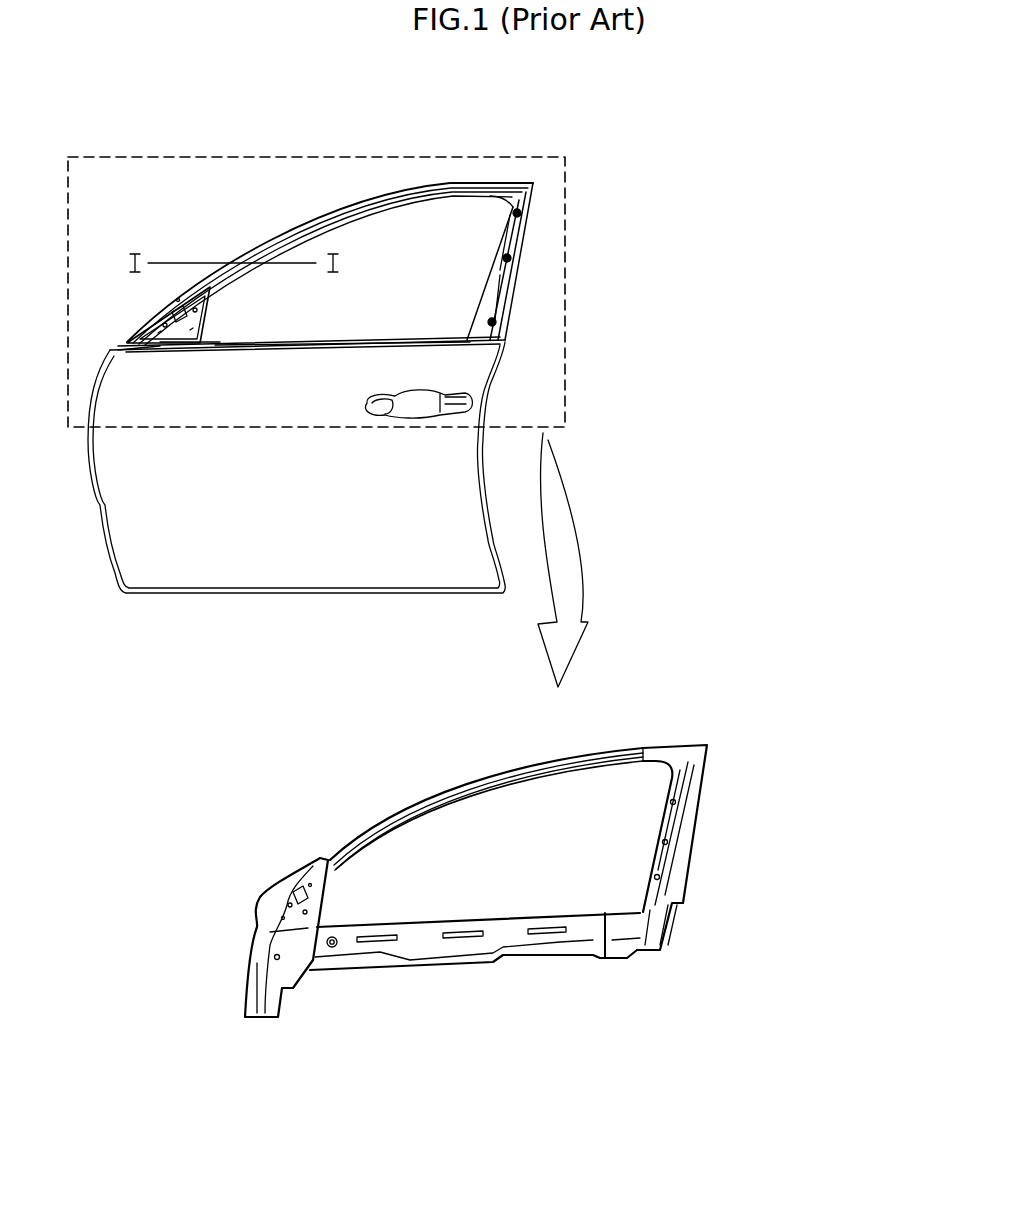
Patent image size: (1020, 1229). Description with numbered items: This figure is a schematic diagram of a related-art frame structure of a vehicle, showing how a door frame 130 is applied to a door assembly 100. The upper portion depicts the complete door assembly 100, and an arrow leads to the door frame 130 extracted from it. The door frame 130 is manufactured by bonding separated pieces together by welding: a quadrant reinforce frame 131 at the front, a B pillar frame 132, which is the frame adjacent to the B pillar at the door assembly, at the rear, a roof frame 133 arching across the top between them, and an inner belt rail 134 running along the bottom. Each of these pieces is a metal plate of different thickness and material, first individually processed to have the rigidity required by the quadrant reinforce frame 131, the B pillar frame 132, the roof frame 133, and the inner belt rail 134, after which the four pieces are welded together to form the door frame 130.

The door assembly 100 is at (584, 122).
The door frame 130 is at (667, 727).
The quadrant reinforce frame 131 is at (260, 960).
The B pillar frame 132 is at (697, 835).
The roof frame 133 is at (445, 790).
The inner belt rail 134 is at (425, 950).